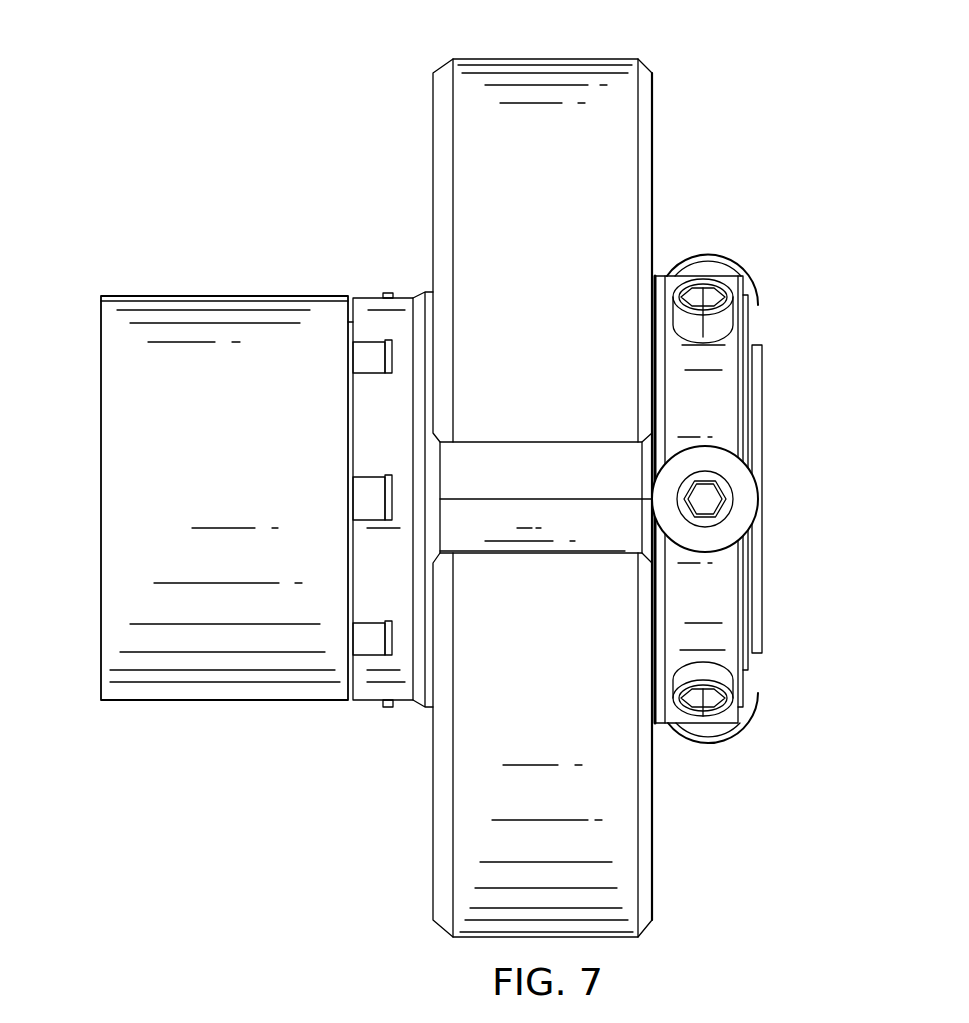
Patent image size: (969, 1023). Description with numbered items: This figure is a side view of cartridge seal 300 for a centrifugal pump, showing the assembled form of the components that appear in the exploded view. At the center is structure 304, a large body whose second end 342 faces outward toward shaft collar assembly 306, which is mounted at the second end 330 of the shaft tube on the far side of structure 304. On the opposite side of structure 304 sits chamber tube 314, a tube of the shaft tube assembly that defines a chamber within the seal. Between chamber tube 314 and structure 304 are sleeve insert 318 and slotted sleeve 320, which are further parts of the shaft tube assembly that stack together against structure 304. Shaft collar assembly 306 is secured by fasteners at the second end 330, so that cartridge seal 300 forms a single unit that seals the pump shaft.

The cartridge seal 300 is at (238, 102).
The structure 304 is at (653, 162).
The shaft collar assembly 306 is at (728, 603).
The chamber tube 314 is at (107, 497).
The sleeve insert 318 is at (380, 358).
The slotted sleeve 320 is at (389, 292).
The second end 330 is at (772, 442).
The second end 342 is at (662, 272).